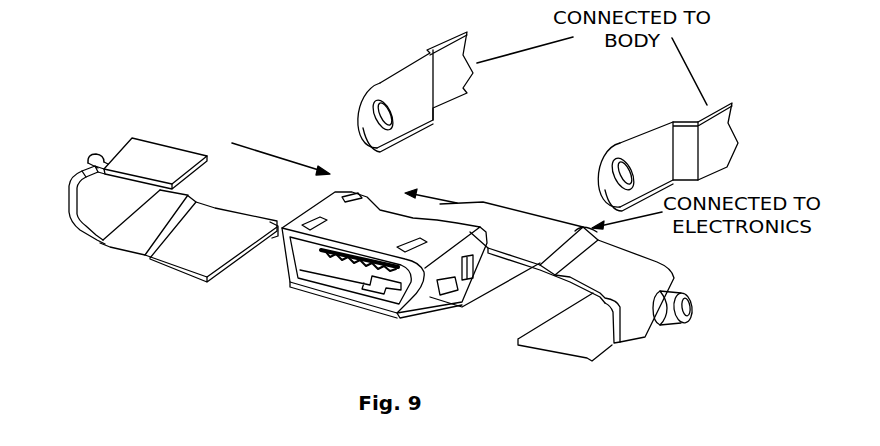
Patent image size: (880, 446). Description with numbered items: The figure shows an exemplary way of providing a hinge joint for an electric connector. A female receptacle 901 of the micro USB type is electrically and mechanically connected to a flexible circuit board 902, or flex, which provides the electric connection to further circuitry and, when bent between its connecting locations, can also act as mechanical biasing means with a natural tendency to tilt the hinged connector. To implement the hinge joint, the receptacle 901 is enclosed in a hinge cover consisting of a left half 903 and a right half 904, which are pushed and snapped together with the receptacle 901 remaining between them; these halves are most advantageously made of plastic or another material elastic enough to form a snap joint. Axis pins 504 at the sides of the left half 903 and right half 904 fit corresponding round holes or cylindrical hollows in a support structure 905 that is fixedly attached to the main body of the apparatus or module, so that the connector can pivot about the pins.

The axis pin 504 is at (90, 160).
The female receptacle 901 is at (338, 282).
The flexible circuit board 902 is at (512, 220).
The left half 903 is at (100, 238).
The right half 904 is at (600, 362).
The support structure 905 is at (393, 76).